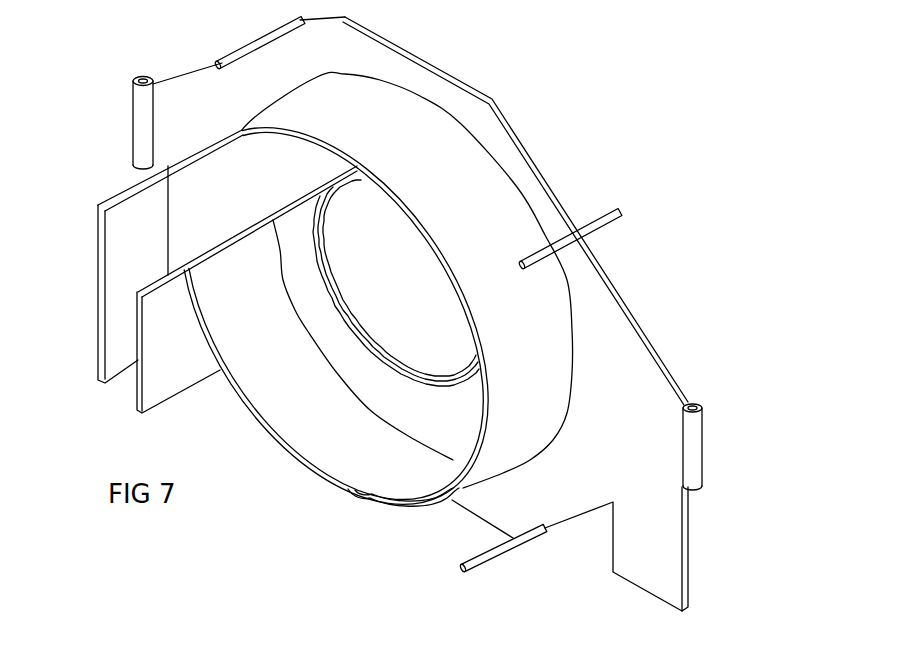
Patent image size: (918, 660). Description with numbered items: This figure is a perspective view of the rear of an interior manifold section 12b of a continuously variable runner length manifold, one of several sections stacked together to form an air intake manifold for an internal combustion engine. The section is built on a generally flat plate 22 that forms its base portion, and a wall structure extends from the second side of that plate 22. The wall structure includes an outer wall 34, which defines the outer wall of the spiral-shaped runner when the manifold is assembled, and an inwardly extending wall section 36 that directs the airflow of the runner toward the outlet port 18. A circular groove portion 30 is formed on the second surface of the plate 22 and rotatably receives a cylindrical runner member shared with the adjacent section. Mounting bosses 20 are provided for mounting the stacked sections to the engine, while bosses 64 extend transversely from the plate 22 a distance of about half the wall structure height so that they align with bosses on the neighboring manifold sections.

The manifold section 12b is at (553, 165).
The outlet port 18 is at (168, 378).
The mounting boss 20 is at (138, 133).
The flat plate 22 is at (633, 365).
The circular groove portion 30 is at (347, 315).
The outer wall 34 is at (443, 133).
The inwardly extending wall section 36 is at (256, 222).
The boss 64 is at (258, 46).